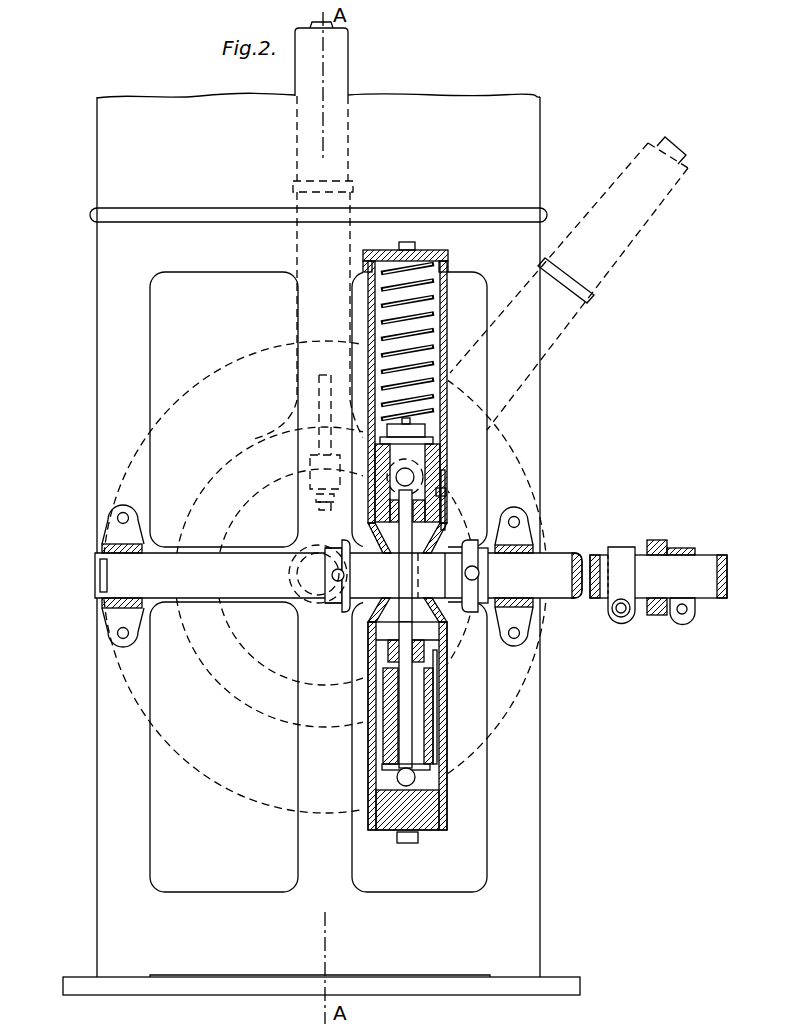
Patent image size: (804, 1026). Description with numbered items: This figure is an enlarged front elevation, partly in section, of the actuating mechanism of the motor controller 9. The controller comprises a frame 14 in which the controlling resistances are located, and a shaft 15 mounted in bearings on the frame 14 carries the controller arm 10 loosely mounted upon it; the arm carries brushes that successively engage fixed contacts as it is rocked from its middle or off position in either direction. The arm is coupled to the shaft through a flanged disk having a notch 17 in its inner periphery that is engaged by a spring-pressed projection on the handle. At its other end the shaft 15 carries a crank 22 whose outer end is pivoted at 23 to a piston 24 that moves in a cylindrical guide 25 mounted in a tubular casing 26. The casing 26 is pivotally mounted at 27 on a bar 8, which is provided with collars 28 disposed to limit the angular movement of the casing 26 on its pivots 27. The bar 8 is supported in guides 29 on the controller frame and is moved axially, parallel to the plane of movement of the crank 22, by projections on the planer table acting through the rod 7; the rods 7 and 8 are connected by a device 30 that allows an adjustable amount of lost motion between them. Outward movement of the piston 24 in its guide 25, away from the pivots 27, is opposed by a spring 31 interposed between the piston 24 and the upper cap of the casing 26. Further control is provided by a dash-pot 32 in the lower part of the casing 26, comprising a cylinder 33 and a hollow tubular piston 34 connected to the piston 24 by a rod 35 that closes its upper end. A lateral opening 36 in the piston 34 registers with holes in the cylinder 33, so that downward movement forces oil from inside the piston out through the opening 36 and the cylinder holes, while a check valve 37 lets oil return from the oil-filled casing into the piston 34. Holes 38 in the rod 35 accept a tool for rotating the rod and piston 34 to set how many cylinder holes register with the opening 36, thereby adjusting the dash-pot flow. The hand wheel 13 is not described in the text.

The rod 7 is at (656, 613).
The bar 8 is at (560, 560).
The motor controller 9 is at (548, 745).
The controller arm 10 is at (300, 245).
The hand wheel 13 is at (220, 417).
The frame 14 is at (97, 298).
The shaft 15 is at (312, 578).
The notch 17 is at (313, 466).
The crank 22 is at (334, 556).
The pivot 23 is at (436, 510).
The piston 24 is at (430, 446).
The cylindrical guide 25 is at (441, 463).
The tubular casing 26 is at (441, 343).
The pivots 27 is at (446, 578).
The collars 28 is at (336, 613).
The guides 29 is at (106, 546).
The lost-motion device 30 is at (648, 547).
The spring 31 is at (438, 309).
The dash-pot 32 is at (440, 738).
The cylinder 33 is at (426, 670).
The piston 34 is at (430, 757).
The rod 35 is at (422, 638).
The lateral opening 36 is at (413, 714).
The check valve 37 is at (413, 778).
The holes 38 is at (401, 576).